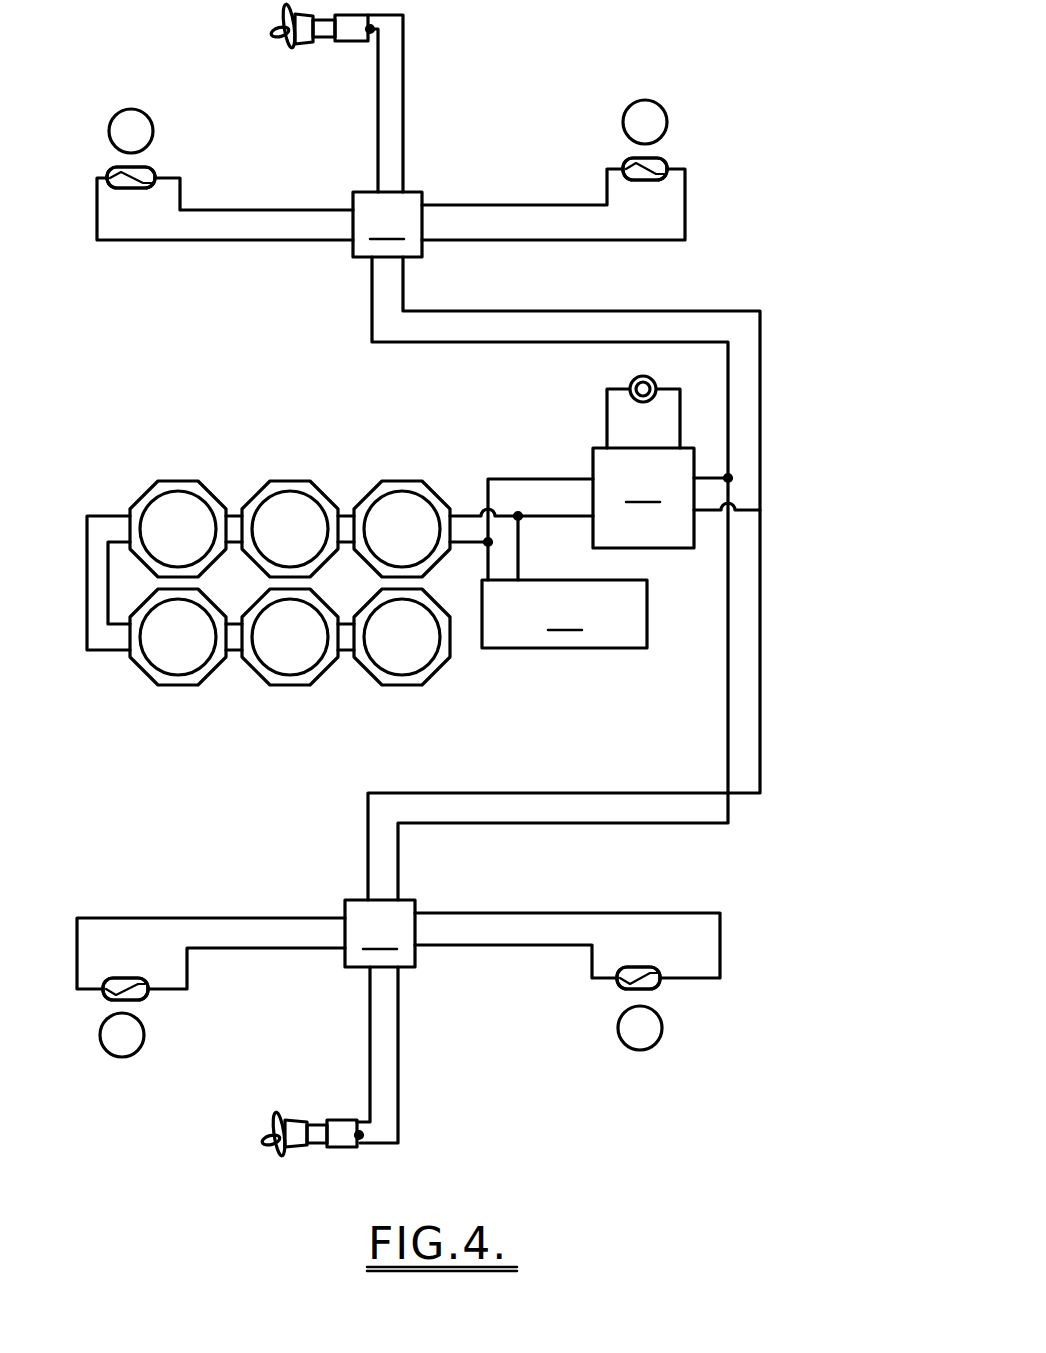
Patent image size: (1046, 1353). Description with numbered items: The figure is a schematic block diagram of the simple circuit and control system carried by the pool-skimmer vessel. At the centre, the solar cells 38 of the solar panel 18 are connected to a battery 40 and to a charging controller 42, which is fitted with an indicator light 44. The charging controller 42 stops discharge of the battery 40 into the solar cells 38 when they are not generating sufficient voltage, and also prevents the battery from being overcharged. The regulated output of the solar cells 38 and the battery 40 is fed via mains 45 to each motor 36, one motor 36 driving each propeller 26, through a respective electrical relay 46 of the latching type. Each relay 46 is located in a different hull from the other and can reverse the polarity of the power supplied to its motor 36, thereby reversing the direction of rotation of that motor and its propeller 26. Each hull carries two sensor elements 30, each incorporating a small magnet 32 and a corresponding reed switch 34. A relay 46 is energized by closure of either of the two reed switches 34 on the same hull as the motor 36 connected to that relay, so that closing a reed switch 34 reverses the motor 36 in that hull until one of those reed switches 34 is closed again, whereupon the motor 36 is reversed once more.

The solar panel 18 is at (268, 583).
The propeller unit 26 is at (300, 42).
The sensor element 30 is at (108, 158).
The magnet 32 is at (150, 117).
The reed switch 34 is at (120, 189).
The motor 36 is at (352, 35).
The solar cells 38 is at (262, 482).
The battery 40 is at (564, 614).
The charging controller 42 is at (643, 498).
The indicator light 44 is at (642, 376).
The mains 45 is at (612, 342).
The electrical relay 46 is at (383, 579).